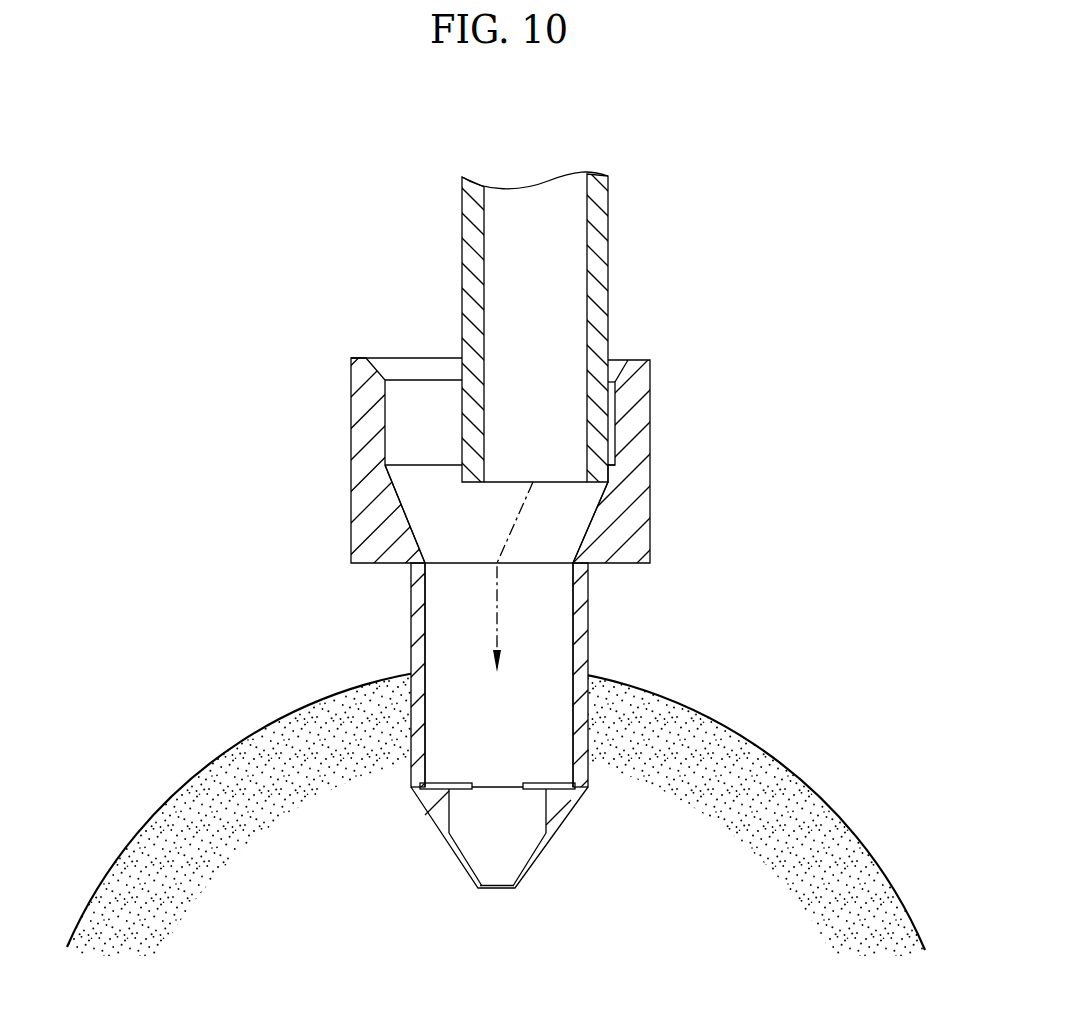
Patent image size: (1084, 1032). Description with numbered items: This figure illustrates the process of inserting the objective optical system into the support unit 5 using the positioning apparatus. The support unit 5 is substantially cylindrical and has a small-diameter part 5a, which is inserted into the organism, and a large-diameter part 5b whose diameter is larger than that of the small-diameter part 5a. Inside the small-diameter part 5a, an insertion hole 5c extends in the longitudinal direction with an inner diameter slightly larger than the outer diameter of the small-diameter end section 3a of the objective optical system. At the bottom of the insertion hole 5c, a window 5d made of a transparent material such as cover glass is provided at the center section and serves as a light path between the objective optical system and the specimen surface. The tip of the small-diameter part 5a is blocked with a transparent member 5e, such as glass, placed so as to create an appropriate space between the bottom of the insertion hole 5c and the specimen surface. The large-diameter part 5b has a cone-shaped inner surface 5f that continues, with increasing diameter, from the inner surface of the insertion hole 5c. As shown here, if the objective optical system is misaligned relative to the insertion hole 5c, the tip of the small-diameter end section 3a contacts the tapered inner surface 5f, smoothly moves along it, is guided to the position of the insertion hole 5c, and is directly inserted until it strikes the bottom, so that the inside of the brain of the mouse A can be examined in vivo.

The support unit 5 is at (678, 198).
The small-diameter end section 3a is at (462, 240).
The large-diameter part 5b is at (351, 452).
The inner surface 5f is at (404, 512).
The small-diameter part 5a is at (411, 609).
The insertion hole 5c is at (560, 607).
The window 5d is at (496, 783).
The transparent member 5e is at (524, 870).
The mouse A is at (698, 708).